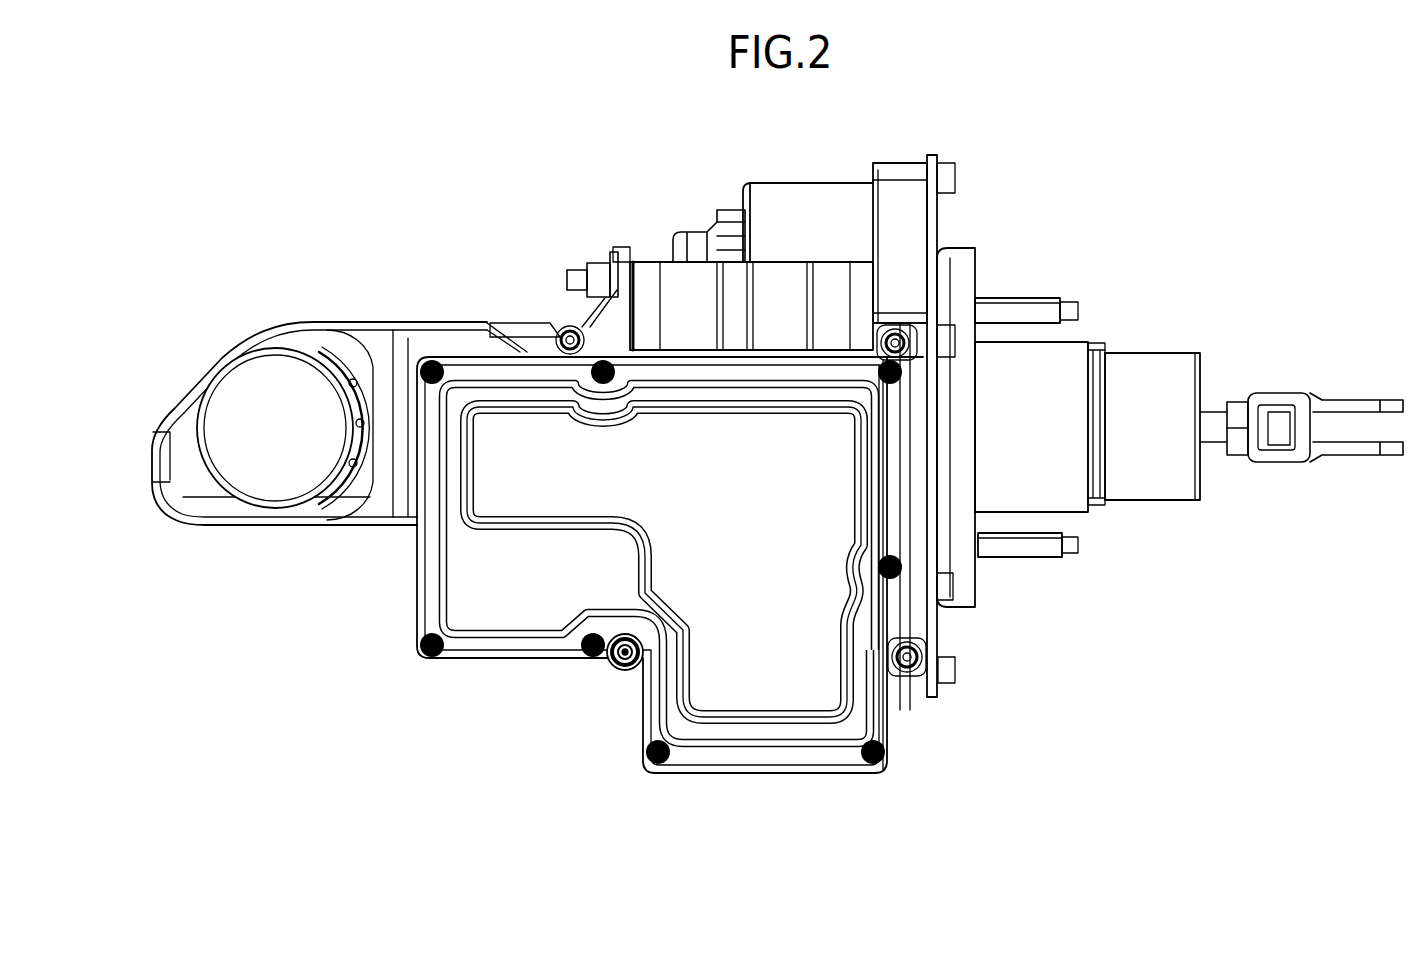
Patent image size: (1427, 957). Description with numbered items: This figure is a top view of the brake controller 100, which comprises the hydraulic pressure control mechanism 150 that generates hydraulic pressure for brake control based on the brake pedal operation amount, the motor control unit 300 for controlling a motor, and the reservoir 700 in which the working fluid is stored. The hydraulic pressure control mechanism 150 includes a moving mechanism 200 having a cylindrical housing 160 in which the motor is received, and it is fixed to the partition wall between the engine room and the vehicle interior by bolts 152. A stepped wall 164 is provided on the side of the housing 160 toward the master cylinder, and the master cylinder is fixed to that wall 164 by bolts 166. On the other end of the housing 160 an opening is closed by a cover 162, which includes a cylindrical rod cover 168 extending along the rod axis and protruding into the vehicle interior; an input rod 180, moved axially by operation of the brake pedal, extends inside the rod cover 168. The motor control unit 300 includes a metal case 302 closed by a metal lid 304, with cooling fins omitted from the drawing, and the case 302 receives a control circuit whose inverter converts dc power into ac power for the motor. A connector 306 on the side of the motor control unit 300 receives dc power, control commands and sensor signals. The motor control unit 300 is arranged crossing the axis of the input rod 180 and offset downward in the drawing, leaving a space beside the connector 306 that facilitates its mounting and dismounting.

The brake controller 100 is at (777, 439).
The hydraulic pressure control mechanism 150 is at (427, 297).
The bolts 152 is at (1020, 298).
The housing 160 is at (883, 164).
The cover 162 is at (977, 252).
The stepped wall 164 is at (694, 240).
The bolts 166 is at (595, 270).
The rod cover 168 is at (1160, 488).
The input rod 180 is at (1212, 410).
The moving mechanism 200 is at (751, 237).
The motor control unit 300 is at (497, 663).
The case 302 is at (576, 663).
The lid 304 is at (440, 583).
The connector 306 is at (785, 270).
The reservoir 700 is at (232, 525).